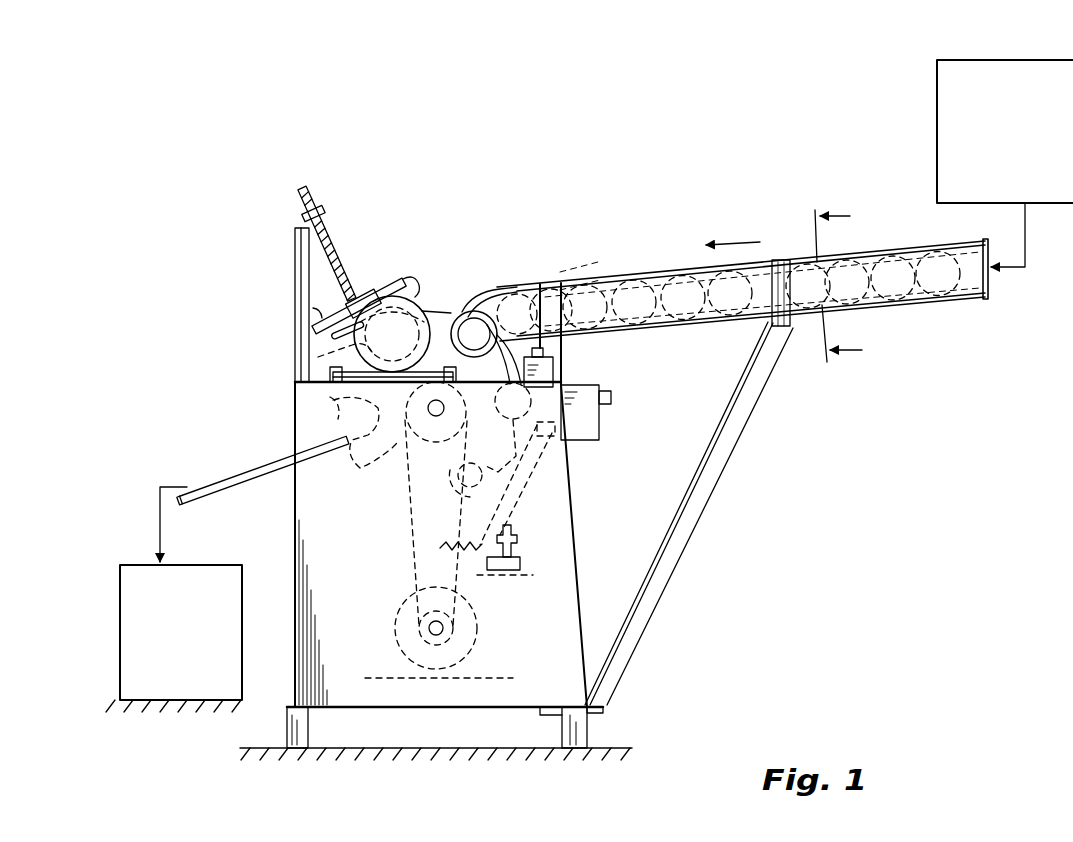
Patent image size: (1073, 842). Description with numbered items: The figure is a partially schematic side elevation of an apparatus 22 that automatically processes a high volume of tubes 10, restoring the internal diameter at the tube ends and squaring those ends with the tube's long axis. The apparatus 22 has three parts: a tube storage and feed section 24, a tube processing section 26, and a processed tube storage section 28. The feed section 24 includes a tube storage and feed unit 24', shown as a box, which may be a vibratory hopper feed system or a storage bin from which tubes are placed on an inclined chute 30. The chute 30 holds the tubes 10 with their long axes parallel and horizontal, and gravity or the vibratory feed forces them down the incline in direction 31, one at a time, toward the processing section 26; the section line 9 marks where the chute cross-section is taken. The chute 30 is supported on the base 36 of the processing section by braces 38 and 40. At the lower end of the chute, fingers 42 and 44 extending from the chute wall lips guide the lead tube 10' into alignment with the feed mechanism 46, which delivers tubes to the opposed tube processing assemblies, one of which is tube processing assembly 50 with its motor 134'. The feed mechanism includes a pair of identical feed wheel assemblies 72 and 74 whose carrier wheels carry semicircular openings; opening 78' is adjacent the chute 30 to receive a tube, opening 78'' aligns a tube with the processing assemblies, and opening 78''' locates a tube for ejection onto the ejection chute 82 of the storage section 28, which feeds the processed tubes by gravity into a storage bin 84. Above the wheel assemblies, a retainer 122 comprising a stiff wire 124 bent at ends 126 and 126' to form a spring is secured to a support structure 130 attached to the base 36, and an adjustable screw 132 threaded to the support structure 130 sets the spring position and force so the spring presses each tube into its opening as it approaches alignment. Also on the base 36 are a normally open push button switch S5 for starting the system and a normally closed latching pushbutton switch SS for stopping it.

The section line 9- 9 is at (855, 284).
The tubes 10 is at (745, 278).
The lead tube 10' is at (517, 314).
The apparatus 22 is at (784, 210).
The tube storage and feed section 24 is at (938, 131).
The tube storage and feed unit 24' is at (961, 197).
The tube processing section 26 is at (490, 255).
The processed tube storage section 28 is at (216, 430).
The inclined chute 30 is at (972, 300).
The direction 31 is at (735, 243).
The base 36 is at (577, 590).
The brace 38 is at (551, 283).
The brace 40 is at (743, 439).
The finger 42 is at (496, 291).
The finger 44 is at (471, 301).
The feed mechanism 46 is at (452, 305).
The tube processing assembly 50 is at (368, 349).
The feed wheel assembly 72 is at (439, 530).
The feed wheel assembly 74 is at (363, 460).
The semicircular opening 78' is at (490, 440).
The semicircular opening 78'' is at (317, 360).
The semicircular opening 78''' is at (318, 401).
The ejection chute 82 is at (241, 485).
The storage bin 84 is at (185, 700).
The retainer 122 is at (288, 247).
The stiff wire 124 is at (315, 310).
The wire end 126 is at (364, 290).
The wire end 126' is at (296, 339).
The support structure 130 is at (295, 273).
The adjustable screw 132 is at (307, 192).
The motor 134' is at (399, 277).
The latching pushbutton switch SS is at (553, 369).
The push button switch S5 is at (611, 398).